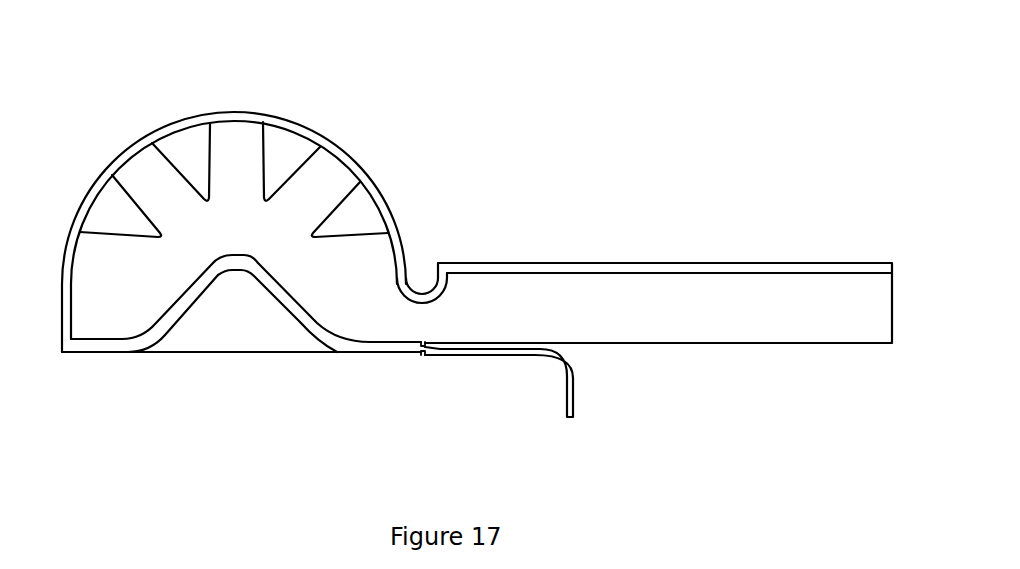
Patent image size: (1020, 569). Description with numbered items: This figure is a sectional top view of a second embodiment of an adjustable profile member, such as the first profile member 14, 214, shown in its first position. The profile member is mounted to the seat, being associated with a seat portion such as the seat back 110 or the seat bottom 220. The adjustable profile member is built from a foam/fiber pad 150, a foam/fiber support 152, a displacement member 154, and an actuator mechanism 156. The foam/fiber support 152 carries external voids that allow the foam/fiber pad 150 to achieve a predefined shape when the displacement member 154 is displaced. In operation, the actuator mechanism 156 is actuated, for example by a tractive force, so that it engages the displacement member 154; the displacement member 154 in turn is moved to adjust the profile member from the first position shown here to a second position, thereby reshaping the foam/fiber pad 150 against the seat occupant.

The first profile member 14 is at (314, 226).
The first profile member 214 is at (314, 226).
The seat back 110 is at (658, 287).
The seat bottom 220 is at (658, 287).
The foam/fiber pad 150 is at (337, 192).
The foam/fiber support 152 is at (221, 113).
The displacement member 154 is at (297, 322).
The actuator mechanism 156 is at (573, 373).